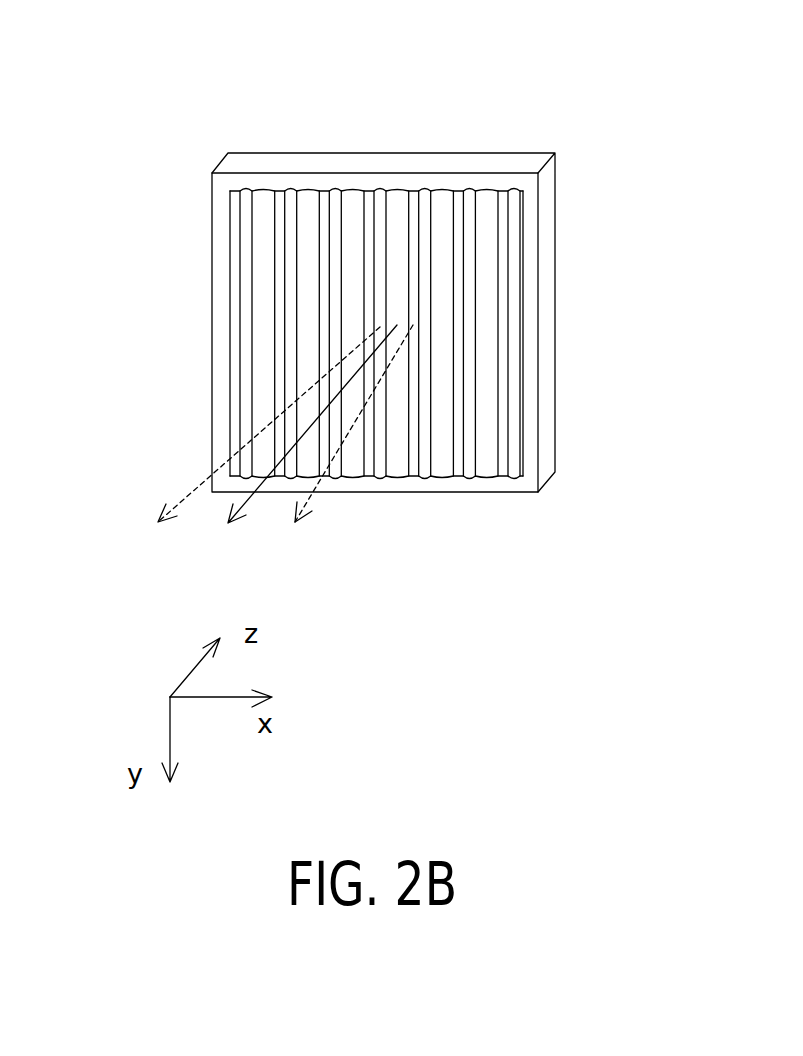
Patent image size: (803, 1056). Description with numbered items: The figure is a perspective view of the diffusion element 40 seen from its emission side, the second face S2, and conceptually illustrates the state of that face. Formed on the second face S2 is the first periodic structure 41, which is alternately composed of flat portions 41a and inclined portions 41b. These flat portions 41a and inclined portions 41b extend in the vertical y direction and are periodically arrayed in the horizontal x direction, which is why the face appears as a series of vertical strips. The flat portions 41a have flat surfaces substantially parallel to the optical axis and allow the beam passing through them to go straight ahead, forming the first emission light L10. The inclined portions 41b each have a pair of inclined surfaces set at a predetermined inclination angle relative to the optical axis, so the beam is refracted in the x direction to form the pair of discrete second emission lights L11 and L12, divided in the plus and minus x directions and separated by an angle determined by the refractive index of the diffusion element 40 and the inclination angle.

The diffusion element 40 is at (437, 265).
The first periodic structure 41 is at (376, 239).
The flat portions 41a is at (308, 233).
The inclined portions 41b is at (457, 235).
The second face S2 is at (528, 295).
The first emission light L10 is at (253, 502).
The second emission light L11 is at (193, 493).
The second emission light L12 is at (313, 500).